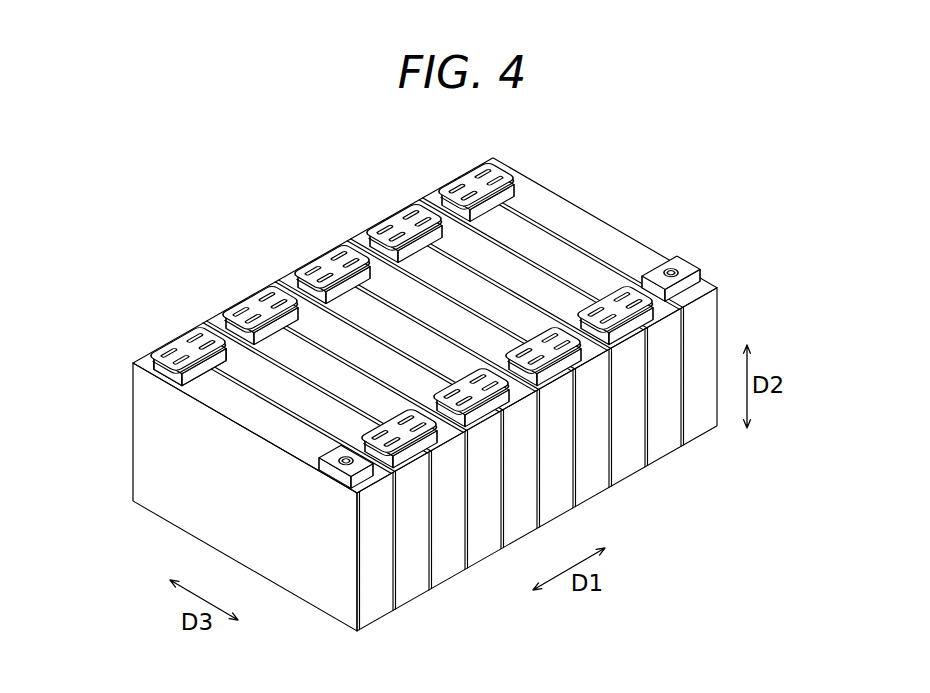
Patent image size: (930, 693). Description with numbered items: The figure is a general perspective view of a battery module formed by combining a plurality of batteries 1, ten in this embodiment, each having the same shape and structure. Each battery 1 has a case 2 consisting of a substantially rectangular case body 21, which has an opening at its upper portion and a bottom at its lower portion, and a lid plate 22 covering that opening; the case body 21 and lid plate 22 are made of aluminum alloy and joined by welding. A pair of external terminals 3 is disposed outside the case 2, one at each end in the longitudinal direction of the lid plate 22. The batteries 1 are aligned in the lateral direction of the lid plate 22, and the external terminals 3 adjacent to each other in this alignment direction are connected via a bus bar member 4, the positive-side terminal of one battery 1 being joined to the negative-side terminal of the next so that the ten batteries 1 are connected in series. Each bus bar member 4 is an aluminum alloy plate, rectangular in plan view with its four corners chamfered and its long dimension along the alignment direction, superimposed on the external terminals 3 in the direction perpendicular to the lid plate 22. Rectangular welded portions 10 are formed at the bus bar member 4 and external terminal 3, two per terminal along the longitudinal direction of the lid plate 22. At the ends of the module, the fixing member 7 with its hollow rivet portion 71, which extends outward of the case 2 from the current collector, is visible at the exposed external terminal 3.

The battery 1 is at (380, 599).
The case 2 is at (90, 500).
The case body 21 is at (143, 441).
The lid plate 22 is at (235, 412).
The external terminal 3 is at (330, 456).
The bus bar member 4 is at (183, 333).
The fixing member 7 is at (678, 268).
The rivet portion 71 is at (306, 494).
The welded portion 10 is at (185, 362).